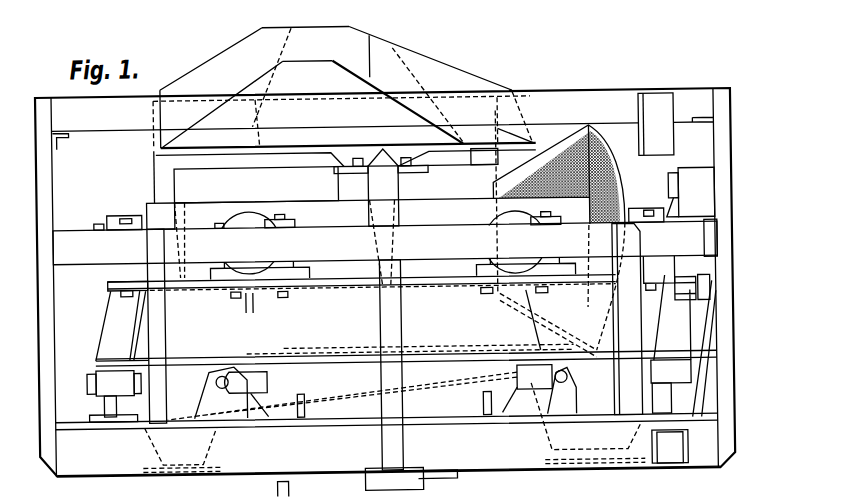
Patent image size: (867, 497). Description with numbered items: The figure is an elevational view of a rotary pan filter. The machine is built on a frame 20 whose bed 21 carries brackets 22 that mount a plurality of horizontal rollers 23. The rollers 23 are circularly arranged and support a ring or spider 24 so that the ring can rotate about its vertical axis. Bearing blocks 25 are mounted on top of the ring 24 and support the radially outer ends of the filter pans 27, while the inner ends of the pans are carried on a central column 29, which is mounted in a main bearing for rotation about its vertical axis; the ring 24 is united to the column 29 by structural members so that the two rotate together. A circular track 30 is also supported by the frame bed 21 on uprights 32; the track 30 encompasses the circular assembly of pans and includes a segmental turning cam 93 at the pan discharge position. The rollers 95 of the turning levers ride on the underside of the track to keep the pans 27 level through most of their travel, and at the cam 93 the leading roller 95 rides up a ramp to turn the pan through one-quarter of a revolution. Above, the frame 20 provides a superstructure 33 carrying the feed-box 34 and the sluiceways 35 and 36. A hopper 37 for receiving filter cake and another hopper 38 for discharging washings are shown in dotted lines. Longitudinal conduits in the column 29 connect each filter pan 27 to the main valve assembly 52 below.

The frame 20 is at (727, 198).
The bed 21 is at (498, 477).
The brackets 22 is at (202, 402).
The horizontal rollers 23 is at (98, 371).
The ring or spider 24 is at (105, 325).
The bearing blocks 25 is at (288, 226).
The filter pans 27 is at (615, 182).
The central column 29 is at (425, 188).
The circular track 30 is at (72, 238).
The uprights 32 is at (162, 327).
The superstructure 33 is at (599, 100).
The feed-box 34 is at (377, 40).
The sluiceway 35 is at (463, 84).
The sluiceway 36 is at (195, 77).
The hopper 37 is at (540, 446).
The hopper 38 is at (205, 448).
The main valve assembly 52 is at (362, 489).
The segmental turning cam 93 is at (693, 177).
The rollers 95 is at (700, 306).